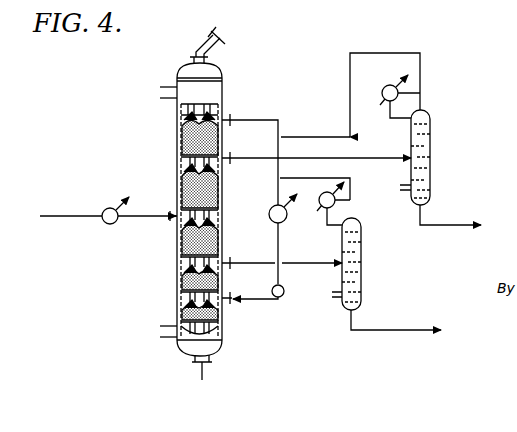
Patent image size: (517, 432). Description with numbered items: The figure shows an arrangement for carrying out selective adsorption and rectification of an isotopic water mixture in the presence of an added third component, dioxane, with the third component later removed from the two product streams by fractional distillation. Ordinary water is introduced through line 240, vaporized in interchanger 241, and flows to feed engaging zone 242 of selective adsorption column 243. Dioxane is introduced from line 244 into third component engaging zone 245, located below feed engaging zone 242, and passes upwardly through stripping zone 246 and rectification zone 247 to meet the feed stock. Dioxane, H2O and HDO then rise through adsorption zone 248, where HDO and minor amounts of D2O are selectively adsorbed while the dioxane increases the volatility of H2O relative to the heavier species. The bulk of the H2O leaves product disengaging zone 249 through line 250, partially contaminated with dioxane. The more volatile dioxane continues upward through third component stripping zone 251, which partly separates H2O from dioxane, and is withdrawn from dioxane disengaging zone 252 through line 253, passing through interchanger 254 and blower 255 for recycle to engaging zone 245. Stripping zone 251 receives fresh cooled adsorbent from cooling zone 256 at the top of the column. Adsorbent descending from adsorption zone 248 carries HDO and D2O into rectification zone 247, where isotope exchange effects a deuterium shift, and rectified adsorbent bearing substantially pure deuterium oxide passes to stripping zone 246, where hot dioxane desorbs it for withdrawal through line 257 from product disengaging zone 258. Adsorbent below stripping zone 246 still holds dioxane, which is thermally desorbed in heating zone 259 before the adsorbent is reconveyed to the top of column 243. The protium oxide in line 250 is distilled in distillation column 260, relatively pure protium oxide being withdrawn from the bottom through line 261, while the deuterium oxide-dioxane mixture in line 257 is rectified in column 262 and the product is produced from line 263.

The line 240 is at (52, 216).
The interchanger 241 is at (110, 224).
The feed engaging zone 242 is at (175, 226).
The selective adsorption column 243 is at (176, 76).
The line 244 is at (272, 297).
The third component engaging zone 245 is at (178, 304).
The stripping zone 246 is at (178, 289).
The rectification zone 247 is at (205, 241).
The adsorption zone 248 is at (178, 188).
The product disengaging zone 249 is at (180, 162).
The line 250 is at (234, 162).
The third component stripping zone 251 is at (190, 133).
The dioxane disengaging zone 252 is at (178, 118).
The line 253 is at (250, 119).
The interchanger 254 is at (270, 212).
The blower 255 is at (284, 292).
The cooling zone 256 is at (205, 106).
The line 257 is at (262, 272).
The product disengaging zone 258 is at (178, 268).
The heating zone 259 is at (213, 330).
The distillation column 260 is at (428, 138).
The line 261 is at (438, 224).
The column 262 is at (362, 259).
The line 263 is at (384, 330).